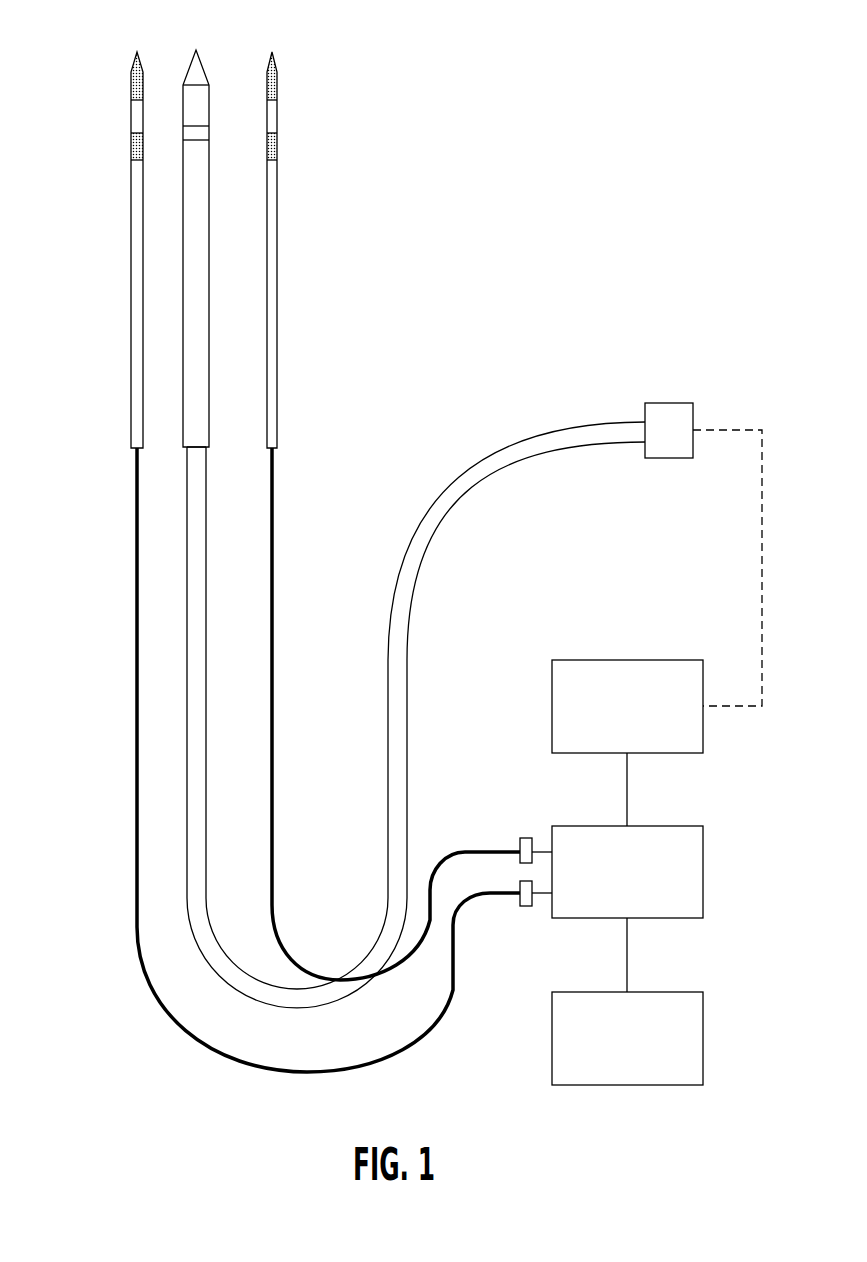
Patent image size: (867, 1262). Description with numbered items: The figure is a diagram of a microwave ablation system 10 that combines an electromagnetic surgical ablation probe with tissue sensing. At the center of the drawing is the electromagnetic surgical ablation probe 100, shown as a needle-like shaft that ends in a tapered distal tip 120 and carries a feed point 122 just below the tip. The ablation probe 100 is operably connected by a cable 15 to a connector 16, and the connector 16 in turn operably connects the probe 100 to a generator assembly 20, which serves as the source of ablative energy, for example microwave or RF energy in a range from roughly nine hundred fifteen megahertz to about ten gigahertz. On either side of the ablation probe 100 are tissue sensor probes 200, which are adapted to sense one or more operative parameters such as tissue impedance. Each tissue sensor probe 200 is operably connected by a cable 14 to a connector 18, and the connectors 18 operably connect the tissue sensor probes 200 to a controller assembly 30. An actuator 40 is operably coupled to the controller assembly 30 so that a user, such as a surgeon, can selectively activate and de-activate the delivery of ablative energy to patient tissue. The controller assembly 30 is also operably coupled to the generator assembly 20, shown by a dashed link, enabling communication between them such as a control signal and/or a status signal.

The microwave ablation system 10 is at (566, 166).
The electromagnetic surgical ablation probe 100 is at (167, 53).
The tapered distal tip 120 is at (204, 70).
The feed point 122 is at (210, 133).
The tissue sensor probe 200 is at (112, 261).
The cable 14 is at (137, 665).
The cable 15 is at (207, 672).
The connector 16 is at (670, 403).
The connector 18 is at (527, 838).
The generator assembly 20 is at (656, 660).
The controller assembly 30 is at (656, 826).
The actuator 40 is at (660, 992).